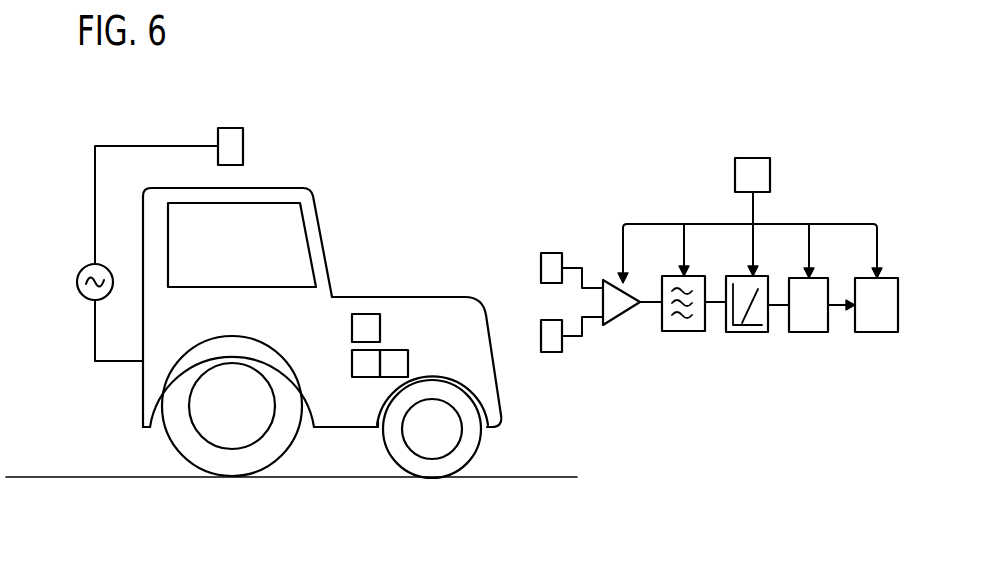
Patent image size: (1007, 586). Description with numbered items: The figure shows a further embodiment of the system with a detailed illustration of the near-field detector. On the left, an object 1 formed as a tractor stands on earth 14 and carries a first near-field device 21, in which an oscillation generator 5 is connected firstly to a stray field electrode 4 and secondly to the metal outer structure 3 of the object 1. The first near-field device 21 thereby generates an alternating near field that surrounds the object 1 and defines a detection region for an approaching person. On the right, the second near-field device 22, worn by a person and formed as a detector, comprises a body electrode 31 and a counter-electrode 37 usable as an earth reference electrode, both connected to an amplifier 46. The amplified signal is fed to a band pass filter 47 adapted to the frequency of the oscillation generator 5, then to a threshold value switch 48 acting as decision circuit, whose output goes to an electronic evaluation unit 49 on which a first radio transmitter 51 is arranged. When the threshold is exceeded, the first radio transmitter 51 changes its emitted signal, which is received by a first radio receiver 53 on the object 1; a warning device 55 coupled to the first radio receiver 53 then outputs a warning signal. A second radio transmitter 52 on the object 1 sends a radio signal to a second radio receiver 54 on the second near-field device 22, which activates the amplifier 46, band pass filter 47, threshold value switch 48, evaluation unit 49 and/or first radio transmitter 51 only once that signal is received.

The object 1 is at (121, 434).
The metal outer structure 3 is at (275, 321).
The stray field electrode 4 is at (243, 140).
The oscillation generator 5 is at (81, 271).
The earth 14 is at (177, 520).
The first near-field device 21 is at (195, 120).
The second near-field device 22 is at (689, 124).
The body electrode 31 is at (550, 253).
The counter-electrode 37 is at (552, 352).
The amplifier 46 is at (626, 312).
The band pass filter 47 is at (683, 331).
The threshold value switch 48 is at (748, 332).
The electronic evaluation unit 49 is at (808, 332).
The first radio transmitter 51 is at (877, 332).
The second radio transmitter 52 is at (398, 377).
The first radio receiver 53 is at (363, 377).
The second radio receiver 54 is at (752, 157).
The warning device 55 is at (365, 313).